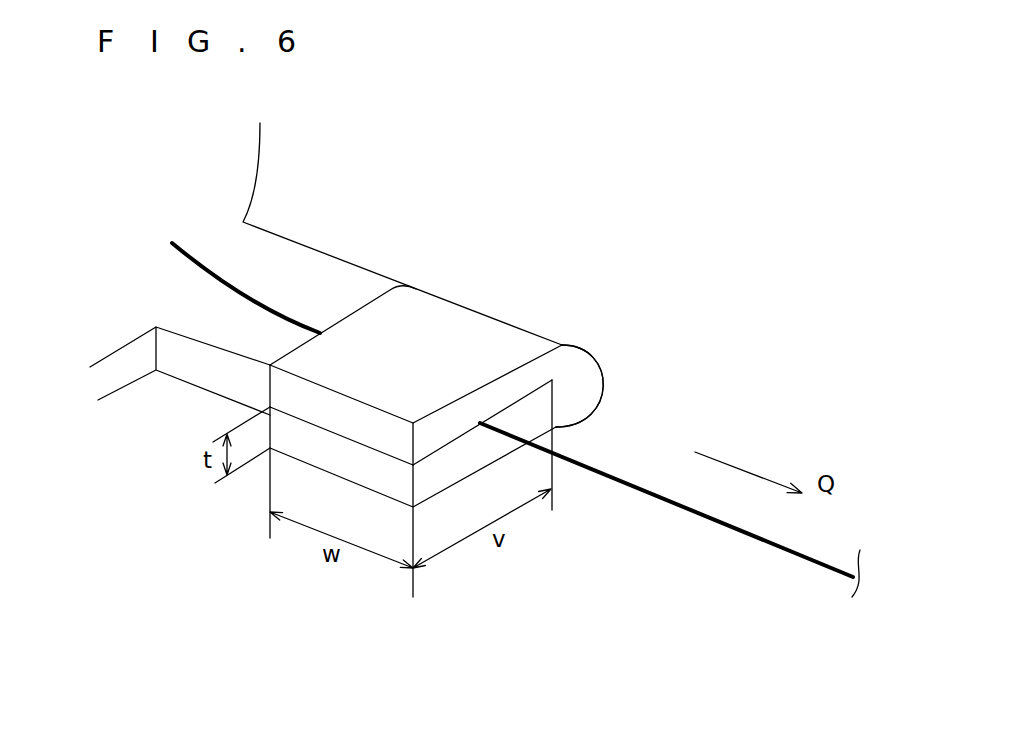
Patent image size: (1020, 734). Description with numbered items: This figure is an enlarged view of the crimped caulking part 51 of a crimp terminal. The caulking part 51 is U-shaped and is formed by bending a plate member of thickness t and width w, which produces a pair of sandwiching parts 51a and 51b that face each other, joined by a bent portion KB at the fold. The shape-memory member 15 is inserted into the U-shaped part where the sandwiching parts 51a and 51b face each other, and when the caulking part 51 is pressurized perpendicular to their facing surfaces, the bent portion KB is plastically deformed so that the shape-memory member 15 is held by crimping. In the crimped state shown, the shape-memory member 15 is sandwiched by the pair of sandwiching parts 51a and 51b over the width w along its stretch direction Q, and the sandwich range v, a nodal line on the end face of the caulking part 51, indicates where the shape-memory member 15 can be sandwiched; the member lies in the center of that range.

The caulking part 51 is at (451, 360).
The sandwiching part 51a is at (458, 415).
The sandwiching part 51b is at (458, 457).
The bent portion KB is at (582, 372).
The shape-memory member 15 is at (781, 548).